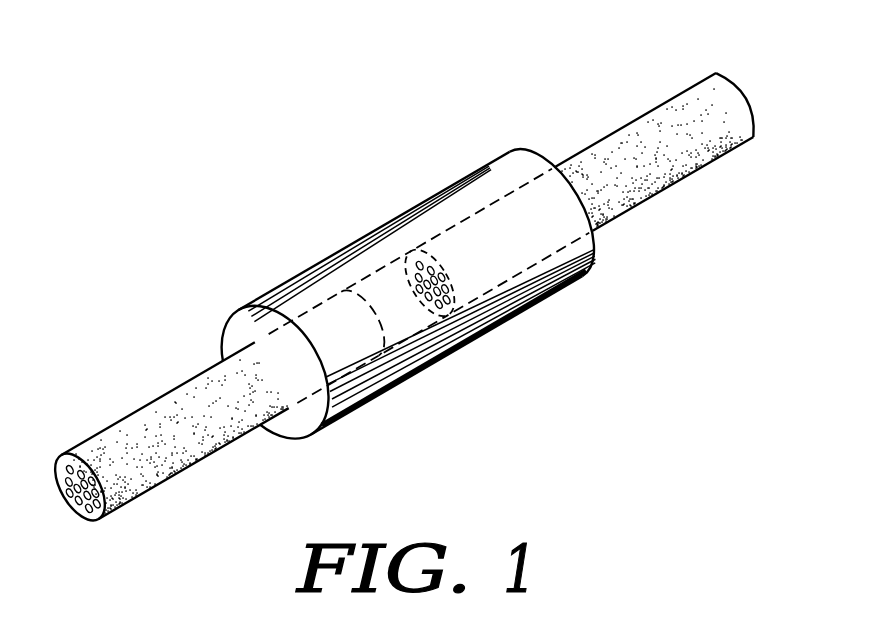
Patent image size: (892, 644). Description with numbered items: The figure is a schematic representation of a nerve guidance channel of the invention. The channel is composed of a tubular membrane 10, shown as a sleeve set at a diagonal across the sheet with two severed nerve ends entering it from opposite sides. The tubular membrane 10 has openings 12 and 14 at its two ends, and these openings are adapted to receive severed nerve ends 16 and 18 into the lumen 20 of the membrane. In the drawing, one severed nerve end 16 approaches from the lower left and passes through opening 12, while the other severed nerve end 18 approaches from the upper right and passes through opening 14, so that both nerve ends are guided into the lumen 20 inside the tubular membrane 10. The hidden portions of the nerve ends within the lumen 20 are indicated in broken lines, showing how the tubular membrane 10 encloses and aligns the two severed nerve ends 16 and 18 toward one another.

The tubular membrane 10 is at (284, 240).
The opening 12 is at (260, 357).
The opening 14 is at (557, 166).
The severed nerve end 16 is at (212, 417).
The severed nerve end 18 is at (618, 184).
The lumen 20 is at (410, 328).